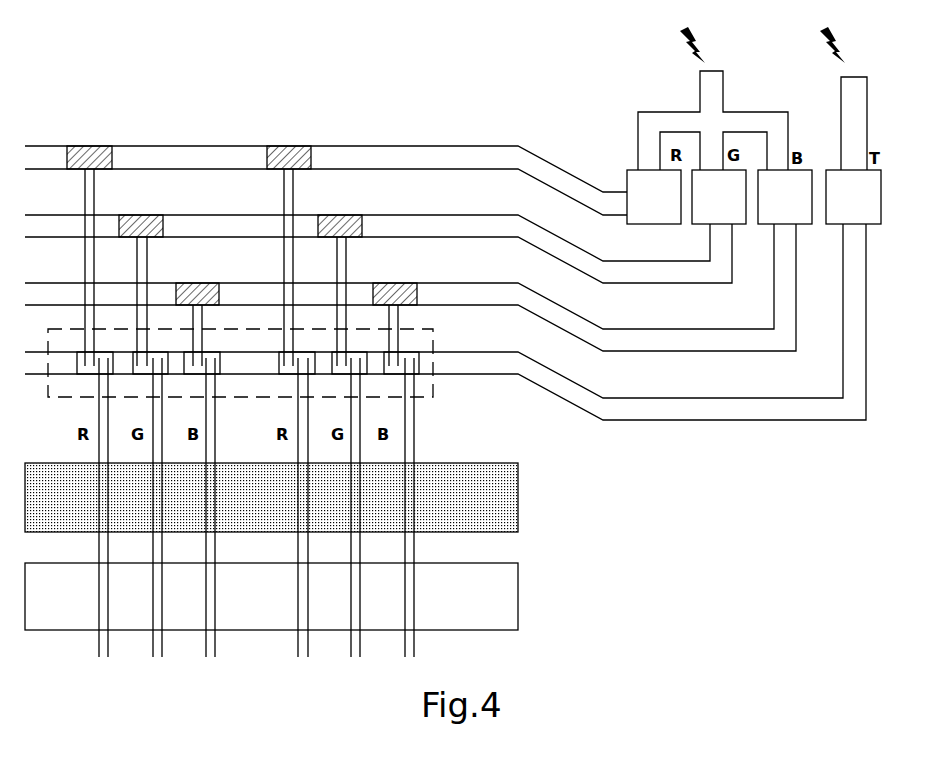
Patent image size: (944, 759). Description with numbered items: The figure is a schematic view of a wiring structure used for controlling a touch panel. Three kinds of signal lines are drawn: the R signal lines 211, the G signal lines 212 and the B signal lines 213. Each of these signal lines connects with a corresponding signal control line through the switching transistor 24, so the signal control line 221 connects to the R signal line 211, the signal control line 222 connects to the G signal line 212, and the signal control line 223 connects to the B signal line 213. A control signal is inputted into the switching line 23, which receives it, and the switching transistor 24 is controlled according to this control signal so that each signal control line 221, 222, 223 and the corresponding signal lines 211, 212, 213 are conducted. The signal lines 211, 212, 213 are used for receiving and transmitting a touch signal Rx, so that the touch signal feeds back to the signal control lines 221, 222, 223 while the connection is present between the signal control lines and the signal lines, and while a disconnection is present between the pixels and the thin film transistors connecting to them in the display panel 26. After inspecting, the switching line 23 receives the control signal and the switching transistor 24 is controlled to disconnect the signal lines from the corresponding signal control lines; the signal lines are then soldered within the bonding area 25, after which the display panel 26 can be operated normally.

The R signal line 211 is at (86, 212).
The G signal line 212 is at (138, 284).
The B signal line 213 is at (213, 445).
The signal control line 221 is at (474, 162).
The signal control line 222 is at (450, 228).
The signal control line 223 is at (468, 300).
The switching line 23 is at (620, 403).
The switching transistor 24 is at (413, 342).
The bonding area 25 is at (508, 493).
The display panel 26 is at (508, 606).